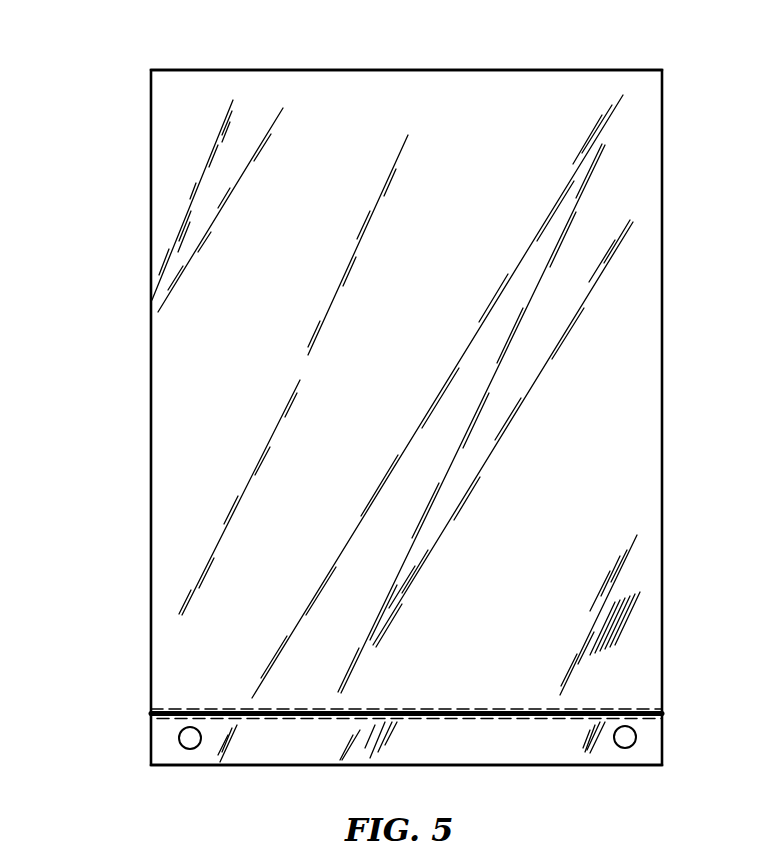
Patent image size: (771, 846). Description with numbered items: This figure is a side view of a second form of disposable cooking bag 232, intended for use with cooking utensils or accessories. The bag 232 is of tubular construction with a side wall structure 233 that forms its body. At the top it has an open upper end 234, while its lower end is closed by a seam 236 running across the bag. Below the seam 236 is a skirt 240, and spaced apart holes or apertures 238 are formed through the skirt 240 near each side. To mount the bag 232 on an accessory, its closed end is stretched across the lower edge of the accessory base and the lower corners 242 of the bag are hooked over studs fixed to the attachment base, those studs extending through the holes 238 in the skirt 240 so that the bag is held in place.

The disposable cooking bag 232 is at (130, 128).
The side wall structure 233 is at (425, 311).
The open upper end 234 is at (463, 68).
The seam 236 is at (490, 708).
The holes or apertures 238 is at (185, 740).
The skirt 240 is at (412, 766).
The lower corners 242 is at (163, 752).